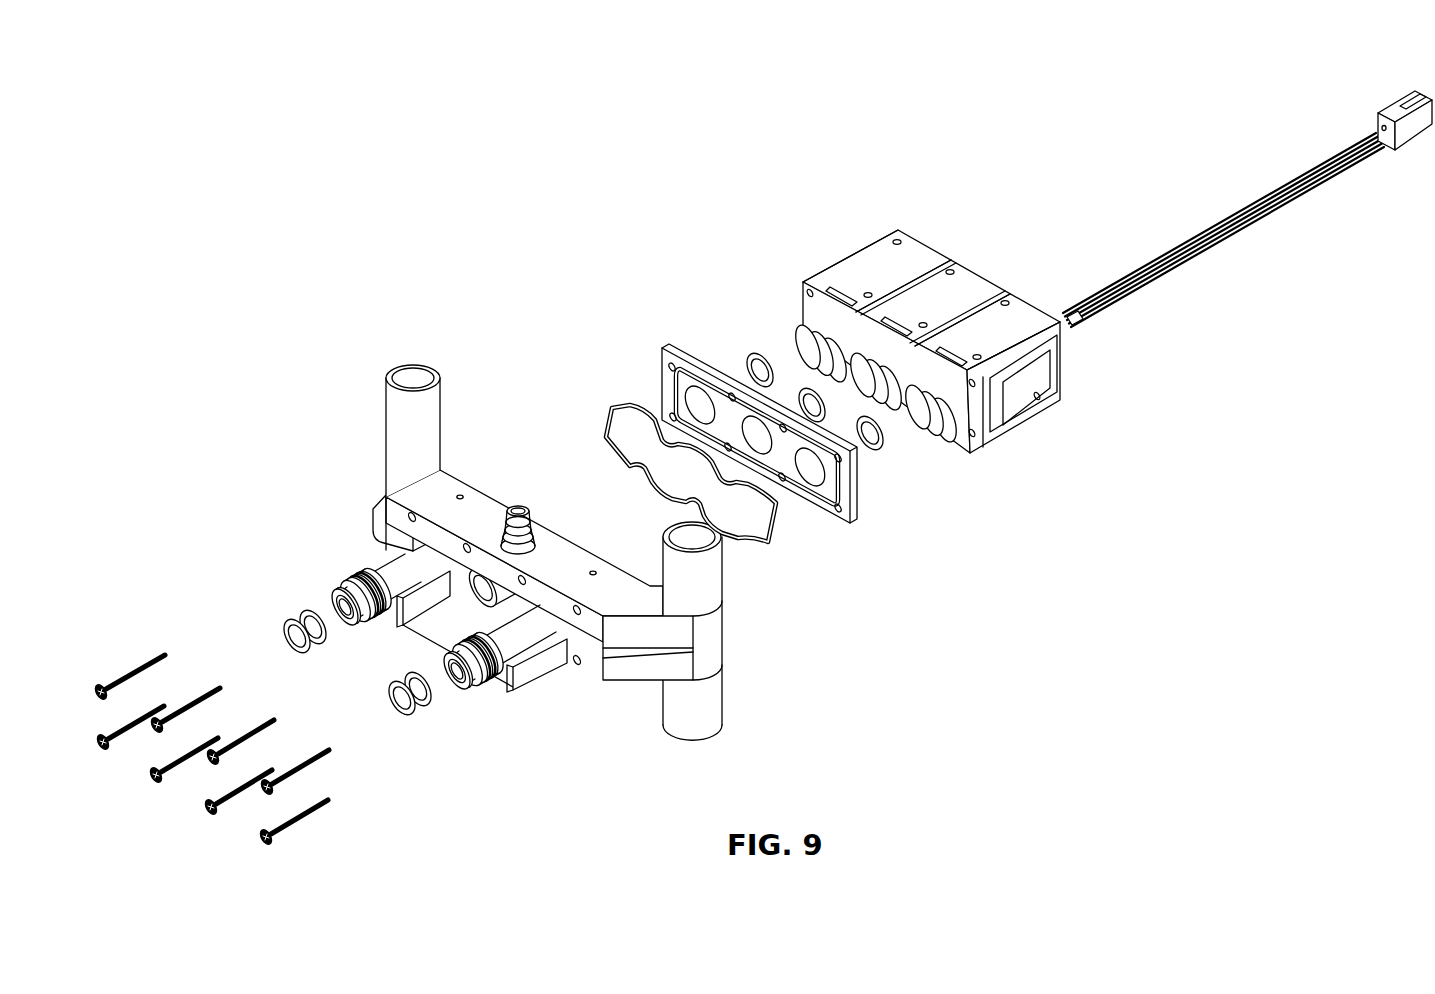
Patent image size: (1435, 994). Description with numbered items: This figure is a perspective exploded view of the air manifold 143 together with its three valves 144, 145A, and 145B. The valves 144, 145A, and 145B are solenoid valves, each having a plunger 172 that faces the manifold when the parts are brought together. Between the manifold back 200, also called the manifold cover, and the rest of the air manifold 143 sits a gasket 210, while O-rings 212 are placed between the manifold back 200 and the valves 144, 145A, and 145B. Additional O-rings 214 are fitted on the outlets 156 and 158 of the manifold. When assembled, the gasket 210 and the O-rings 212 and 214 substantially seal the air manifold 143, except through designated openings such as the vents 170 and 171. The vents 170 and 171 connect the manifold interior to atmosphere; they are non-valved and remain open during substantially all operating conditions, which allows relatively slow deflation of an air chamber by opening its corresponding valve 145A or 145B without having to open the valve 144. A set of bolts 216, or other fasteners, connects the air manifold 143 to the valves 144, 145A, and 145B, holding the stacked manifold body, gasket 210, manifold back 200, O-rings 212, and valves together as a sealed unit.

The air manifold 143 is at (728, 684).
The valve 144 is at (970, 282).
The valve 145A is at (918, 248).
The valve 145B is at (1030, 313).
The outlet 156 is at (337, 625).
The outlet 158 is at (447, 690).
The vent 170 is at (462, 495).
The vent 171 is at (593, 572).
The plunger 172 is at (793, 328).
The manifold back 200 is at (862, 508).
The gasket 210 is at (624, 407).
The O-rings 212 is at (755, 356).
The O-rings 214 is at (303, 615).
The bolts 216 is at (146, 658).